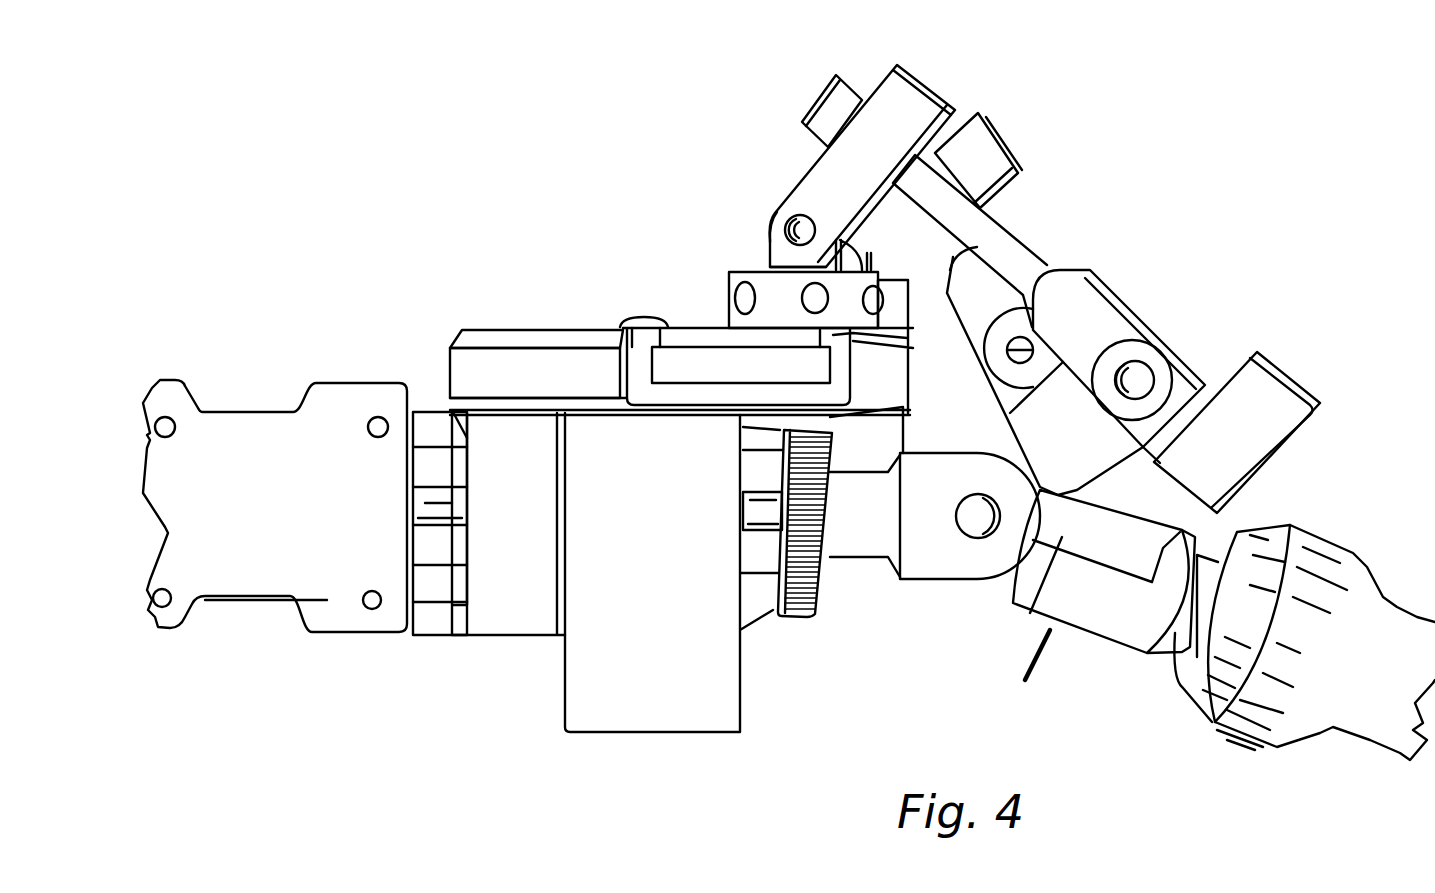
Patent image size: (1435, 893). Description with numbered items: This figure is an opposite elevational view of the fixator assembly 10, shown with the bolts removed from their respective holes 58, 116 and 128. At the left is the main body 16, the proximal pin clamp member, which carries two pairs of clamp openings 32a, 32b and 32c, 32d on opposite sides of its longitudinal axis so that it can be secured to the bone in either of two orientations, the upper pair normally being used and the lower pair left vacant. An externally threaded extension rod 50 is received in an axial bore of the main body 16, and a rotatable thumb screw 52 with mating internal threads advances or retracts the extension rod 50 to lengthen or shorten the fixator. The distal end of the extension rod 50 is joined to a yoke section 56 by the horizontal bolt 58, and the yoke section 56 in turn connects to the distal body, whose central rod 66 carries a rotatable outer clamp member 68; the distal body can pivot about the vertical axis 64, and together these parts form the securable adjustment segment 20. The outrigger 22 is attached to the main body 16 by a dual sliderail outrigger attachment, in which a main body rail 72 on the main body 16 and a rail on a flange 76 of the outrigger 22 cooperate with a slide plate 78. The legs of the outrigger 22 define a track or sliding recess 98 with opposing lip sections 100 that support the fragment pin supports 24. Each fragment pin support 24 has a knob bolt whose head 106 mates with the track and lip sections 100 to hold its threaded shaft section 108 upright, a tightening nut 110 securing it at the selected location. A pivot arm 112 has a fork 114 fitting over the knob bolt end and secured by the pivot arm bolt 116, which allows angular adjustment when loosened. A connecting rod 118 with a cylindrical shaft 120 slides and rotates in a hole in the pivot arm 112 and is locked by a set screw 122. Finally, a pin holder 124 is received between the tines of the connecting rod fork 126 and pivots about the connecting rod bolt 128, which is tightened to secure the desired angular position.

The fixator assembly 10 is at (484, 222).
The main body 16 is at (268, 420).
The securable adjustment segment 20 is at (916, 598).
The outrigger 22 is at (510, 337).
The fragment pin support 24 is at (868, 68).
The clamp opening 32a is at (378, 416).
The clamp opening 32b is at (165, 416).
The clamp opening 32c is at (370, 607).
The clamp opening 32d is at (164, 600).
The extension rod 50 is at (848, 543).
The thumb screw 52 is at (790, 613).
The yoke section 56 is at (1023, 603).
The horizontal bolt 58 is at (975, 508).
The vertical axis 64 is at (1042, 655).
The central rod 66 is at (1180, 630).
The rotatable outer clamp member 68 is at (1307, 550).
The main body rail 72 is at (428, 547).
The flange 76 is at (577, 705).
The slide plate 78 is at (493, 612).
The sliding recess 98 is at (708, 353).
The lip section 100 is at (656, 334).
The head 106 is at (807, 363).
The threaded shaft section 108 is at (770, 262).
The tightening nut 110 is at (742, 268).
The pivot arm 112 is at (803, 143).
The fork 114 is at (775, 197).
The pivot arm bolt 116 is at (800, 214).
The connecting rod 118 is at (985, 207).
The cylindrical shaft 120 is at (993, 237).
The set screw 122 is at (927, 85).
The pin holder 124 is at (1010, 413).
The fork 126 is at (1090, 305).
The connecting rod bolt 128 is at (1140, 373).